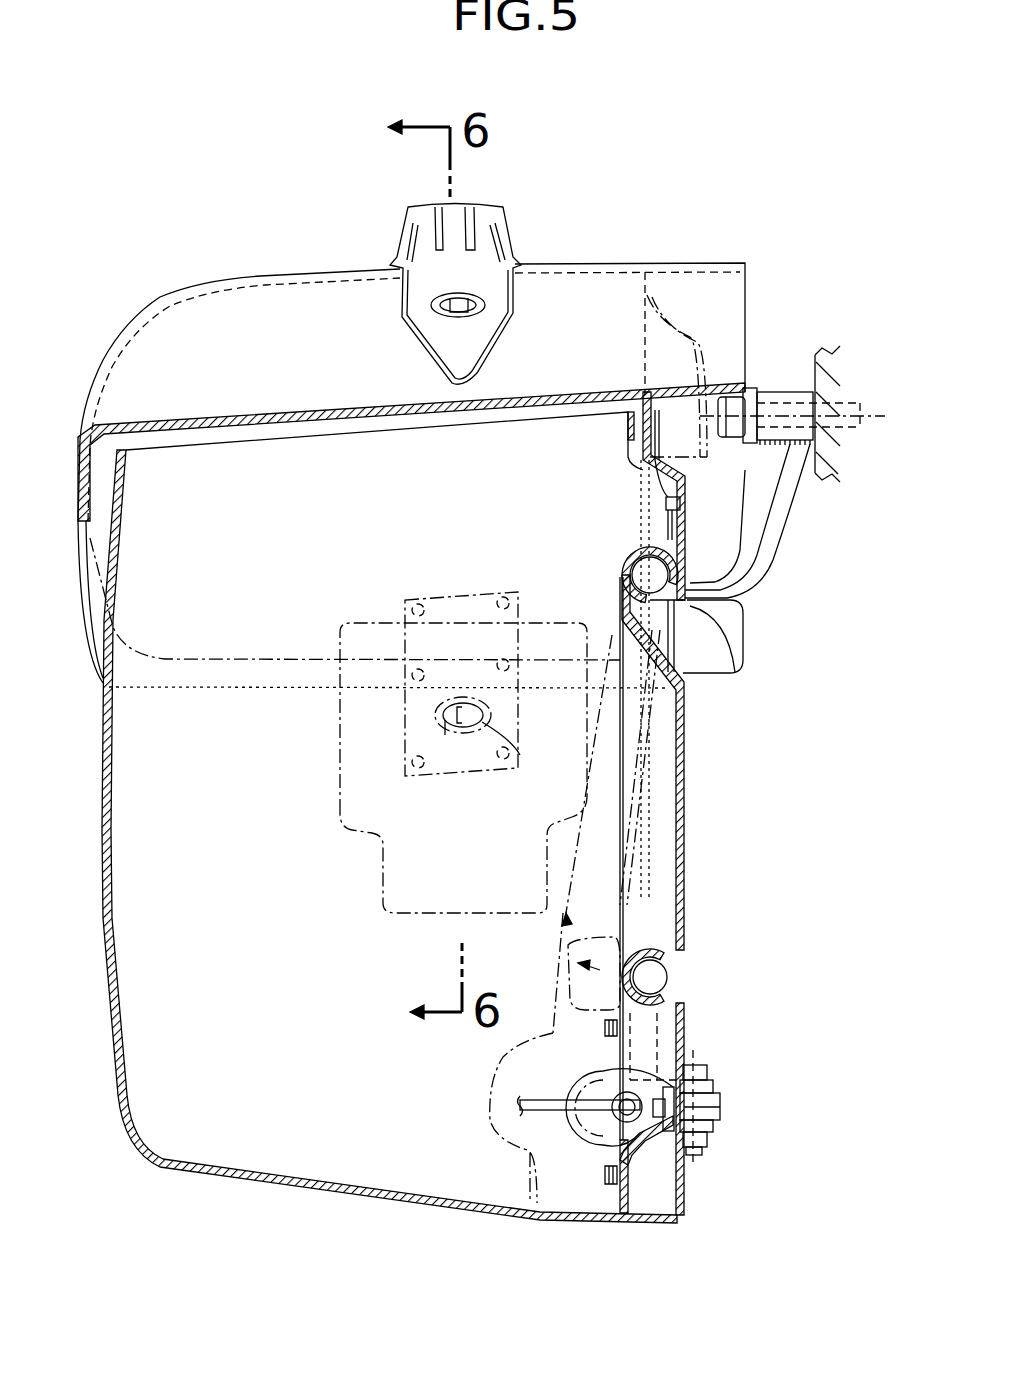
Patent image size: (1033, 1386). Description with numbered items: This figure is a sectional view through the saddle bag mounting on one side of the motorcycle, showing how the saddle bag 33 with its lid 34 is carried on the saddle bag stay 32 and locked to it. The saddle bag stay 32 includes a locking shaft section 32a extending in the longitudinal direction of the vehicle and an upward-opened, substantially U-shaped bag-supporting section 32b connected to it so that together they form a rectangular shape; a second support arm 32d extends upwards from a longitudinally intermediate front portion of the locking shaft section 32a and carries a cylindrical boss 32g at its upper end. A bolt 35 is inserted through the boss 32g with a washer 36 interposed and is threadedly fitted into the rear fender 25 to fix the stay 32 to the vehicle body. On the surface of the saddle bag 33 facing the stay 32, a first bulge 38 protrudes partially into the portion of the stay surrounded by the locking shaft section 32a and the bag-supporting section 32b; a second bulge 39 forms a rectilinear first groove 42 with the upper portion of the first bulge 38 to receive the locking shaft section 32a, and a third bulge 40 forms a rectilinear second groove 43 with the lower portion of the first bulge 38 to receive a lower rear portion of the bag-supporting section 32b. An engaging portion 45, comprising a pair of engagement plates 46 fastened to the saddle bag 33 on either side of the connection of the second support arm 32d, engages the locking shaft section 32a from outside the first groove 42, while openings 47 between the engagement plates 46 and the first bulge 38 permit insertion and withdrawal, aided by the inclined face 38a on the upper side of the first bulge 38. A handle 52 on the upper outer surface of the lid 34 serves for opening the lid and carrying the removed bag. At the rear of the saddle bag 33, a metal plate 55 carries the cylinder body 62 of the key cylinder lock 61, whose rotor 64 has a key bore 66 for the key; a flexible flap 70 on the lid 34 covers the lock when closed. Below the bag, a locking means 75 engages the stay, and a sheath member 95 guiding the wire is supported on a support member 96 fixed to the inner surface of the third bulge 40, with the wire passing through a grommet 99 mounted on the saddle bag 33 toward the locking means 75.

The rear fender 25 is at (818, 470).
The saddle bag stay 32 is at (769, 587).
The locking shaft section 32a is at (637, 555).
The bag-supporting section 32b is at (681, 959).
The second support arm 32d is at (772, 527).
The cylindrical boss 32g is at (787, 392).
The saddle bag 33 is at (150, 1160).
The lid 34 is at (257, 278).
The bolt 35 is at (733, 398).
The washer 36 is at (747, 386).
The first bulge 38 is at (686, 805).
The inclined face 38a is at (627, 636).
The second bulge 39 is at (689, 481).
The third bulge 40 is at (685, 1036).
The first groove 42 is at (673, 654).
The second groove 43 is at (663, 986).
The engaging portion 45 is at (740, 596).
The engagement plate 46 is at (692, 560).
The opening 47 is at (690, 624).
The handle 52 is at (487, 215).
The metal plate 55 is at (397, 747).
The key cylinder lock 61 is at (450, 745).
The cylinder body 62 is at (437, 713).
The rotor 64 is at (473, 700).
The key bore 66 is at (513, 748).
The flap 70 is at (400, 913).
The locking means 75 is at (713, 1160).
The sheath member 95 is at (538, 1108).
The support member 96 is at (626, 1130).
The grommet 99 is at (612, 1083).